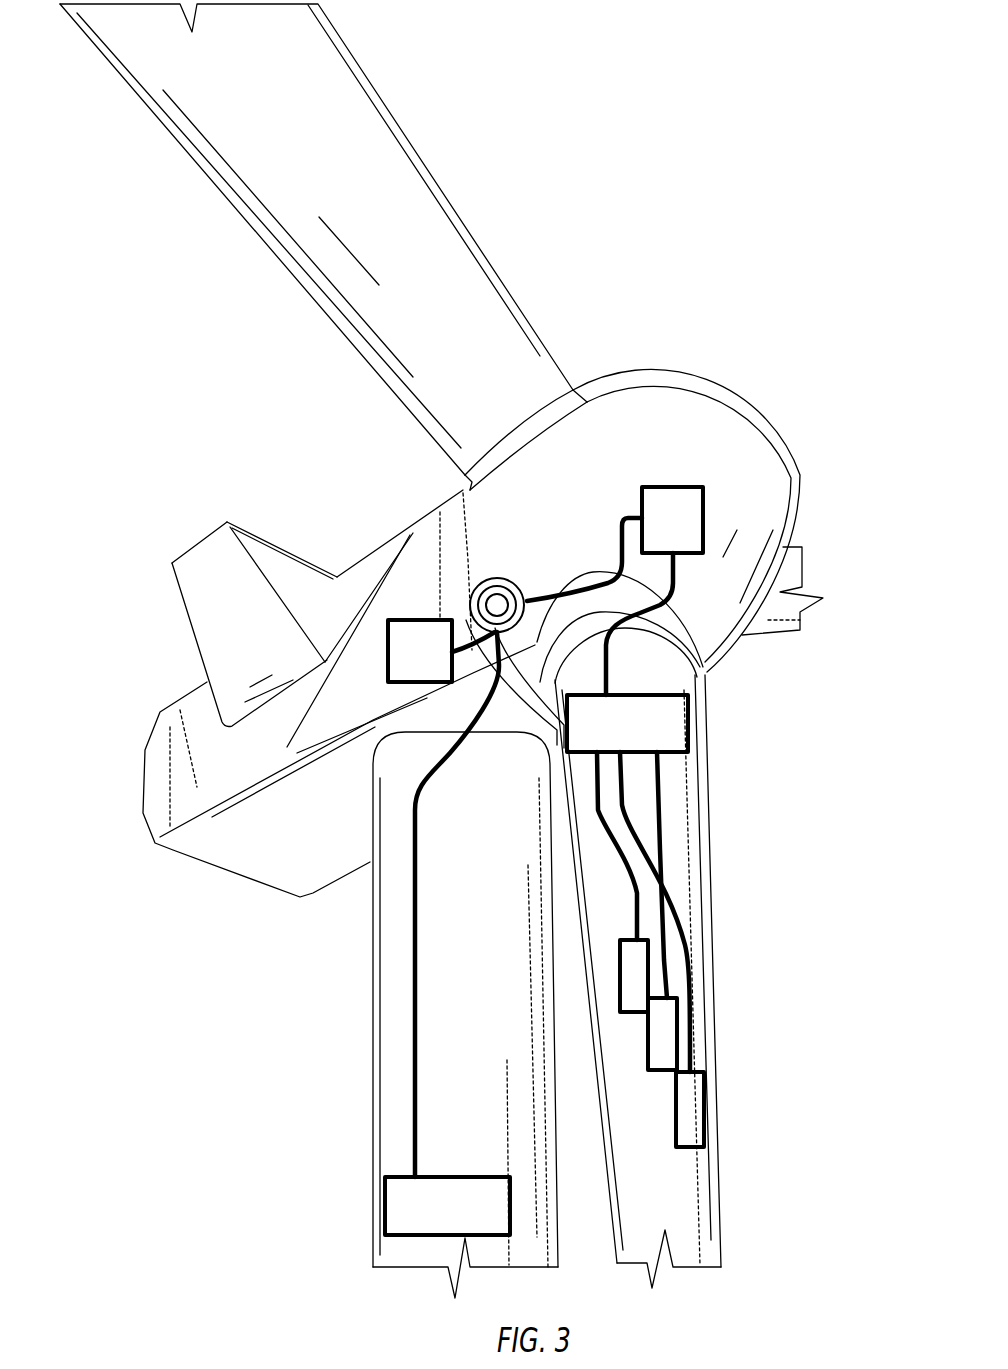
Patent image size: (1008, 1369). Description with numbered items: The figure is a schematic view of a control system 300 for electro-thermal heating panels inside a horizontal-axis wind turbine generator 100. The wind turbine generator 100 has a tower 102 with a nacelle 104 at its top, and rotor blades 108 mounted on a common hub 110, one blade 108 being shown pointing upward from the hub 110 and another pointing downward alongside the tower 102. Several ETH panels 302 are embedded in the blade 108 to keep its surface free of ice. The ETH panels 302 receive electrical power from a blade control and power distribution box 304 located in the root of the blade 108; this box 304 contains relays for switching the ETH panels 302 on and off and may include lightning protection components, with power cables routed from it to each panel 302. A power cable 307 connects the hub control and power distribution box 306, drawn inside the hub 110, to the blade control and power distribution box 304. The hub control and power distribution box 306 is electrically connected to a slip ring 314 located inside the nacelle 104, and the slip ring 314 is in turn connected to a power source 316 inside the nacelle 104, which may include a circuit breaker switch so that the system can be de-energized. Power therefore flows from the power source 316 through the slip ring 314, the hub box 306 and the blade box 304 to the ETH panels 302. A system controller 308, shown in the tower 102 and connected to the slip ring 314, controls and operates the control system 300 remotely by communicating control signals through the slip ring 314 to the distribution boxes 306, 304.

The wind turbine generator 100 is at (293, 365).
The tower 102 is at (392, 1060).
The nacelle 104 is at (230, 847).
The rotor blade 108 is at (677, 813).
The hub 110 is at (737, 455).
The control system 300 is at (668, 378).
The ETH panels 302 is at (633, 972).
The blade control and power distribution box 304 is at (675, 735).
The hub control and power distribution box 306 is at (690, 518).
The power cable 307 is at (610, 660).
The system controller 308 is at (445, 1218).
The slip ring 314 is at (496, 604).
The power source 316 is at (388, 652).